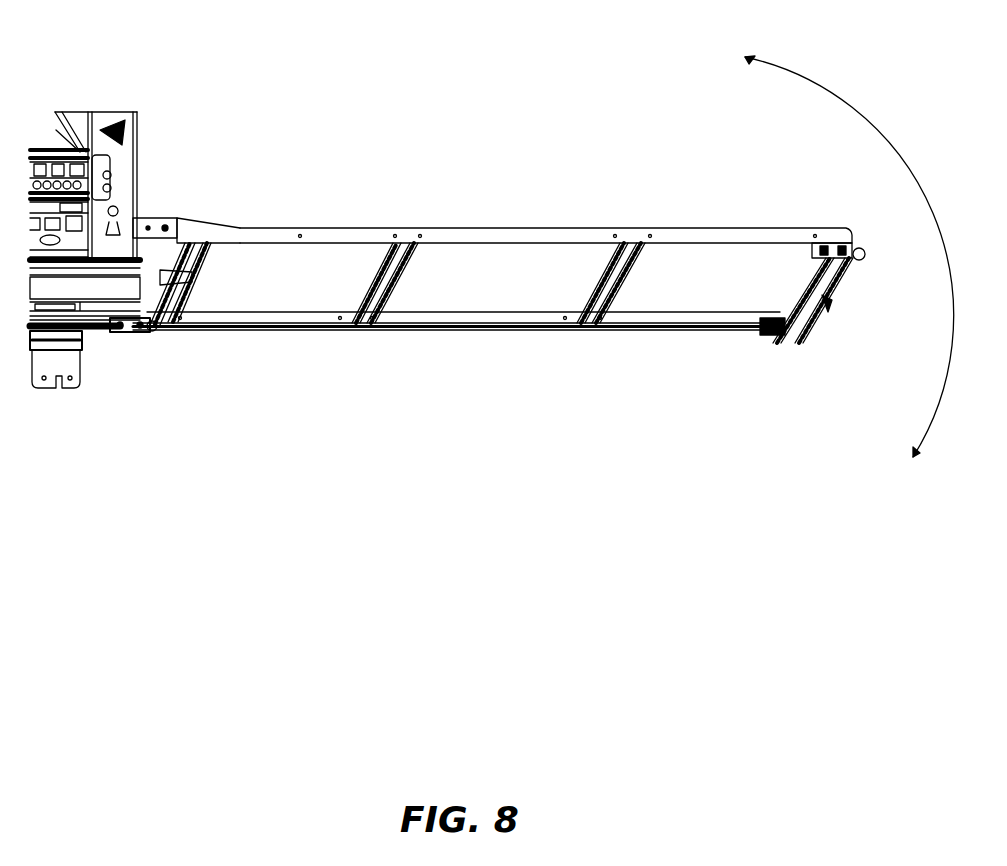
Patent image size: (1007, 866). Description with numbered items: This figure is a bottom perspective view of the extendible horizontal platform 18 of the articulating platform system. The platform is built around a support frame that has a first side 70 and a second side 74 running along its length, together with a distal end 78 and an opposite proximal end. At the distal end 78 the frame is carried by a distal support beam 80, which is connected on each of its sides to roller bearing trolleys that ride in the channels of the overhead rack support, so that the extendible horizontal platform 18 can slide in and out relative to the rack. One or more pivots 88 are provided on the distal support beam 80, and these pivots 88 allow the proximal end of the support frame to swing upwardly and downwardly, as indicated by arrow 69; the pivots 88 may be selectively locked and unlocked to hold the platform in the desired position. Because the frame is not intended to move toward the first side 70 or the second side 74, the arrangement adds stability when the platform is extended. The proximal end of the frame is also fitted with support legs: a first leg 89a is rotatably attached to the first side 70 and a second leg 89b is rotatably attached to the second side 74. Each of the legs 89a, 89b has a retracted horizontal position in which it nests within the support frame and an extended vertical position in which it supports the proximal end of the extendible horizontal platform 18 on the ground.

The extendible horizontal platform 18 is at (415, 100).
The arrow 69 is at (838, 108).
The first side 70 is at (562, 220).
The second side 74 is at (475, 315).
The distal end 78 is at (155, 293).
The distal support beam 80 is at (113, 328).
The pivots 88 is at (168, 223).
The first leg 89a is at (803, 343).
The second leg 89b is at (775, 343).